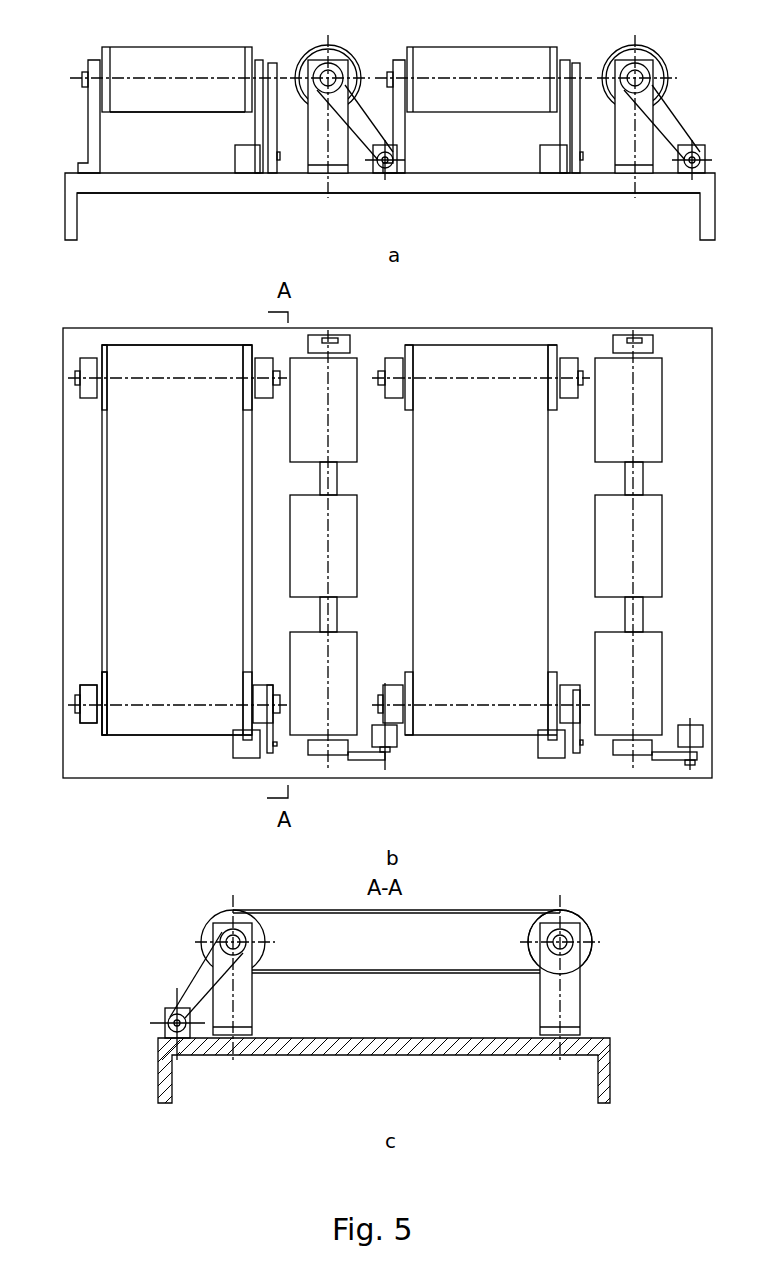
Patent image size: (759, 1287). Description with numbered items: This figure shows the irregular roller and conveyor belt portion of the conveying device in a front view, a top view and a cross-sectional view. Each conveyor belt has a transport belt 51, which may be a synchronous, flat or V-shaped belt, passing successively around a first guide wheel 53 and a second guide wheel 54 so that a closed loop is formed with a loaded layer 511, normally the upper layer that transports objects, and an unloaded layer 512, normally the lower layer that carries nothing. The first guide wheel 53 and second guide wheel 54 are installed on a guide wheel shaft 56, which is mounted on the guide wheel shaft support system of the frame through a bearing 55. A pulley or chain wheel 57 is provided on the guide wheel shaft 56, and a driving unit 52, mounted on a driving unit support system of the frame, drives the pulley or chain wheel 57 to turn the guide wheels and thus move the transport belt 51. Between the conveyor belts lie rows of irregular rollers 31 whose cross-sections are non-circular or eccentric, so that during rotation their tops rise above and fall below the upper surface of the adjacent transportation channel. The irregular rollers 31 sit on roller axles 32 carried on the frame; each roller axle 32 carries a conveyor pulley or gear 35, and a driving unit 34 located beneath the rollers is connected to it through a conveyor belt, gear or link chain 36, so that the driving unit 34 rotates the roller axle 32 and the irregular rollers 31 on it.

The loaded layer 511 is at (187, 46).
The unloaded layer 512 is at (195, 112).
The transport belt 51 is at (107, 610).
The driving unit 52 is at (247, 750).
The first guide wheel 53 is at (105, 671).
The second guide wheel 54 is at (98, 344).
The bearing 55 is at (573, 932).
The guide wheel shaft 56 is at (98, 707).
The pulley or chain wheel 57 is at (270, 686).
The irregular roller 31 is at (396, 427).
The roller axle 32 is at (323, 357).
The driving unit 34 is at (373, 725).
The conveyor pulley or gear 35 is at (313, 755).
The conveyor belt, gear or link chain 36 is at (393, 750).